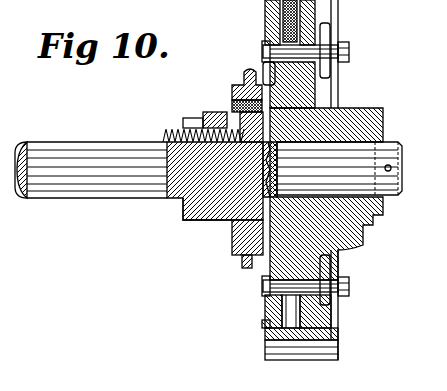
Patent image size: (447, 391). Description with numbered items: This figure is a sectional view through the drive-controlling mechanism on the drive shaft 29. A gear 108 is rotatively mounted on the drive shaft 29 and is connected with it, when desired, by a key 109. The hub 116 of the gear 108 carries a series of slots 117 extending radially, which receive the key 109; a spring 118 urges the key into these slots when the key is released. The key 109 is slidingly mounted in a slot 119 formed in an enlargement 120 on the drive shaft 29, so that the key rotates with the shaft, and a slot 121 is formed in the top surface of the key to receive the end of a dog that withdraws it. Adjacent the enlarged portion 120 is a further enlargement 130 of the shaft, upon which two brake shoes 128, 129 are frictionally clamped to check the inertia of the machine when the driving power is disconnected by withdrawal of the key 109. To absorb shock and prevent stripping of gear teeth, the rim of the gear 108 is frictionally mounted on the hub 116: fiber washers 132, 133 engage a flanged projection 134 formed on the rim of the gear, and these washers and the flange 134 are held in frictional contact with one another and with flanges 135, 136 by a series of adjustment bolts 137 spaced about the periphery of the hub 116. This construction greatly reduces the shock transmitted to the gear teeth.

The drive shaft 29 is at (372, 121).
The gear 108 is at (332, 352).
The key 109 is at (252, 130).
The hub 116 is at (363, 221).
The slots 117 is at (232, 222).
The spring 118 is at (169, 128).
The slot 119 is at (200, 118).
The enlargement 120 is at (182, 218).
The slot 121 is at (227, 118).
The brake shoe 128 is at (250, 263).
The brake shoe 129 is at (247, 72).
The enlargement 130 is at (237, 233).
The fiber washer 132 is at (267, 326).
The fiber washer 133 is at (310, 313).
The flanged projection 134 is at (270, 308).
The flange 135 is at (268, 345).
The flange 136 is at (318, 298).
The adjustment bolts 137 is at (268, 298).